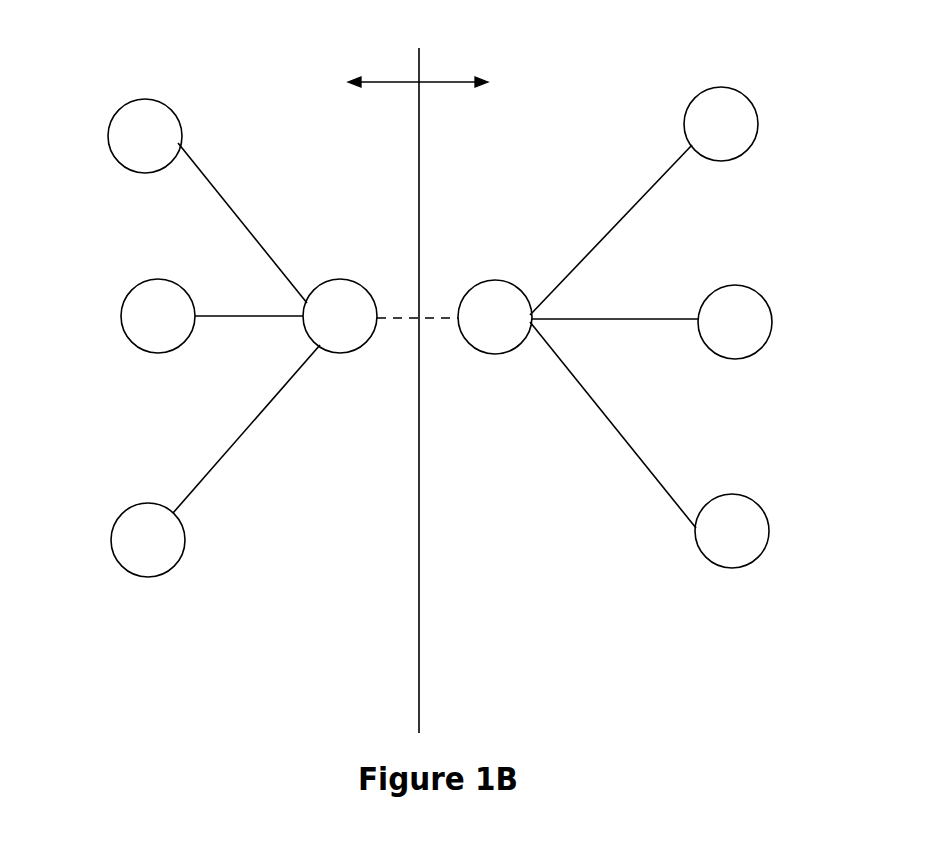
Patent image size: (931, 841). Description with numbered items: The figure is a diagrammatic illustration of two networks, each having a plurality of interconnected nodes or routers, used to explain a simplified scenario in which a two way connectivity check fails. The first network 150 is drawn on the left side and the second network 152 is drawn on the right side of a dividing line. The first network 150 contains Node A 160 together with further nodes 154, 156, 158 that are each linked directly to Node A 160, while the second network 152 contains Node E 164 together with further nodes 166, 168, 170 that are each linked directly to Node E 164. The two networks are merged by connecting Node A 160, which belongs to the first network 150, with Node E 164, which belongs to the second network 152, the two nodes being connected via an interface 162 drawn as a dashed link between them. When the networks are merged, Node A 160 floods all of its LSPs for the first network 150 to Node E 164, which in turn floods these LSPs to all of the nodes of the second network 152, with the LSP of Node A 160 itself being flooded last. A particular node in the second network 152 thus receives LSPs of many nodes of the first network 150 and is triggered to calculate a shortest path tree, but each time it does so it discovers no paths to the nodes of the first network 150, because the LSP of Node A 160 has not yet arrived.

The Network_1 150 is at (222, 66).
The Network_2 152 is at (642, 58).
The node B 154 is at (108, 137).
The node C 156 is at (118, 322).
The node D 158 is at (111, 540).
The Node A 160 is at (335, 354).
The interface 162 is at (402, 320).
The Node E 164 is at (495, 348).
The node F 166 is at (758, 124).
The node G 168 is at (772, 320).
The node H 170 is at (768, 529).